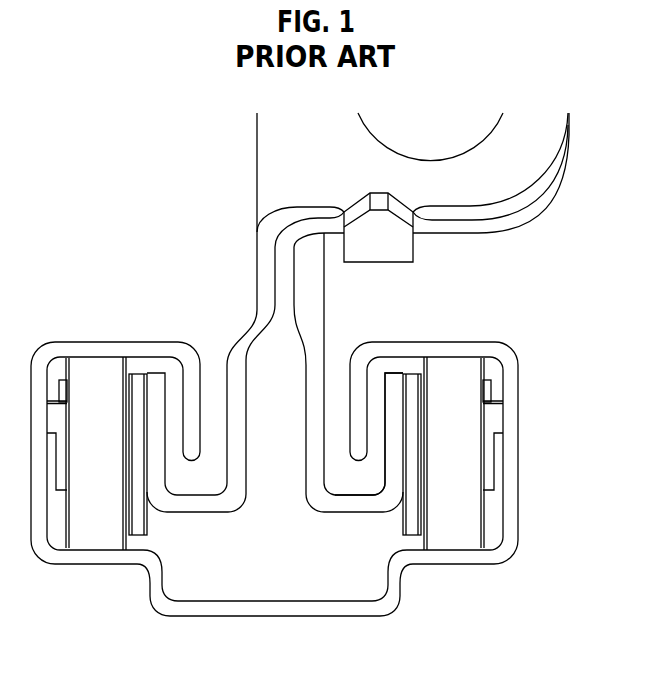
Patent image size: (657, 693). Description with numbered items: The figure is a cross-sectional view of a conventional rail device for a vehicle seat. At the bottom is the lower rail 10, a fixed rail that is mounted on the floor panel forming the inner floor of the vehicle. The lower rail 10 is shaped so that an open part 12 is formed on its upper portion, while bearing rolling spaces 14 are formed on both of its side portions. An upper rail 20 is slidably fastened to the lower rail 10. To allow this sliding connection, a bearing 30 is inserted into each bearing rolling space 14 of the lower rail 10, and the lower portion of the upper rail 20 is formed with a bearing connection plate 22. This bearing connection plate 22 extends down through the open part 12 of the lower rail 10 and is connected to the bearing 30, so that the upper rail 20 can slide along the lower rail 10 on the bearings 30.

The lower rail 10 is at (128, 598).
The open part 12 is at (342, 412).
The bearing rolling space 14 is at (490, 522).
The upper rail 20 is at (230, 313).
The bearing connection plate 22 is at (392, 437).
The bearing 30 is at (83, 367).